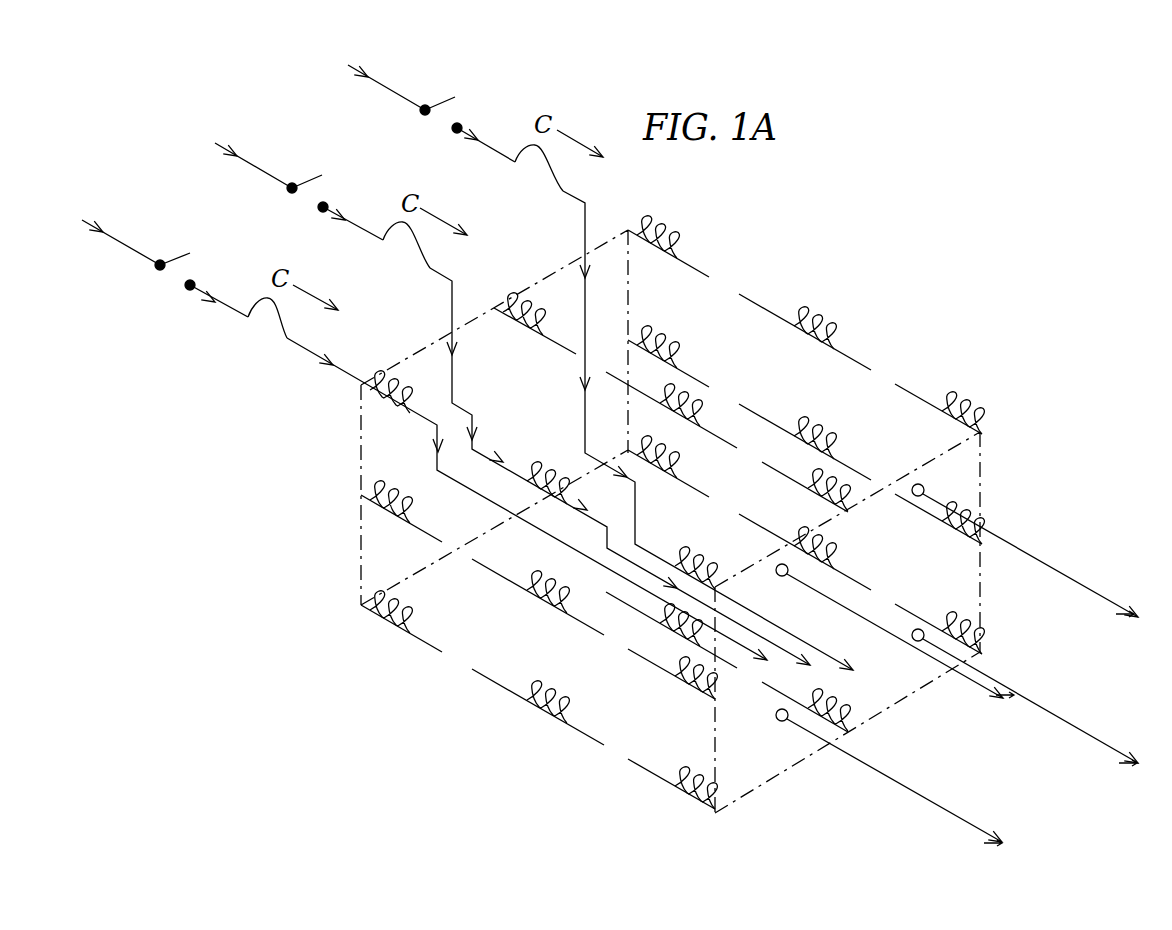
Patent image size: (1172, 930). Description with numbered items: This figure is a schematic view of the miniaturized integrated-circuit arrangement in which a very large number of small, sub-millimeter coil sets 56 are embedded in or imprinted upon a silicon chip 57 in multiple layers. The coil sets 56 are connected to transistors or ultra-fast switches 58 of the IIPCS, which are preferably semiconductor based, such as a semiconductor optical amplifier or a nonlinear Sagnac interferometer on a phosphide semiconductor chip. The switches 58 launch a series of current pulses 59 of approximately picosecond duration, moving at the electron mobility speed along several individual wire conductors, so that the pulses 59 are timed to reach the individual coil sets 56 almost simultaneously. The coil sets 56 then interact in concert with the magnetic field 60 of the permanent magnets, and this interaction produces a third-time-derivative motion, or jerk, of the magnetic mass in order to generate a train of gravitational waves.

The coil sets 56 is at (382, 392).
The silicon chip 57 is at (982, 458).
The ultra-fast switches 58 is at (174, 258).
The current pulses 59 is at (268, 323).
The magnetic field of the permanent magnets 60 is at (1100, 598).